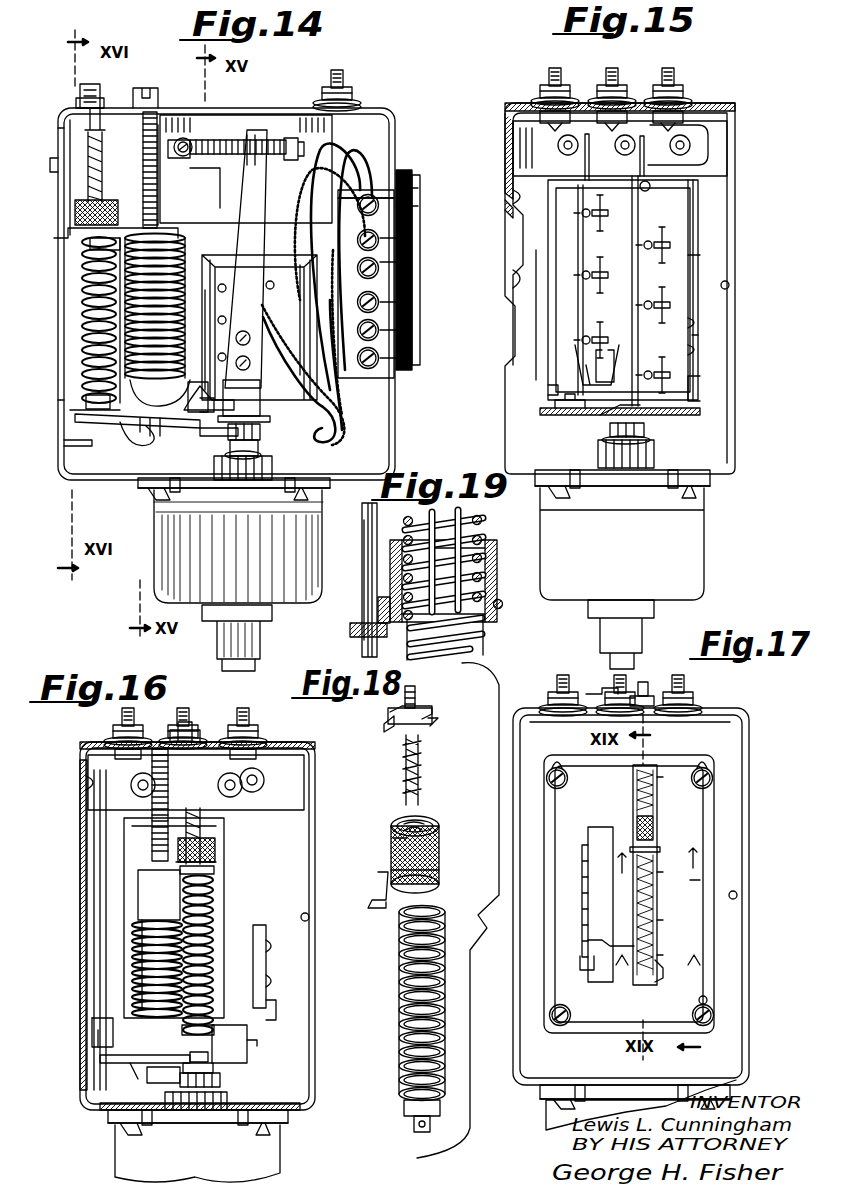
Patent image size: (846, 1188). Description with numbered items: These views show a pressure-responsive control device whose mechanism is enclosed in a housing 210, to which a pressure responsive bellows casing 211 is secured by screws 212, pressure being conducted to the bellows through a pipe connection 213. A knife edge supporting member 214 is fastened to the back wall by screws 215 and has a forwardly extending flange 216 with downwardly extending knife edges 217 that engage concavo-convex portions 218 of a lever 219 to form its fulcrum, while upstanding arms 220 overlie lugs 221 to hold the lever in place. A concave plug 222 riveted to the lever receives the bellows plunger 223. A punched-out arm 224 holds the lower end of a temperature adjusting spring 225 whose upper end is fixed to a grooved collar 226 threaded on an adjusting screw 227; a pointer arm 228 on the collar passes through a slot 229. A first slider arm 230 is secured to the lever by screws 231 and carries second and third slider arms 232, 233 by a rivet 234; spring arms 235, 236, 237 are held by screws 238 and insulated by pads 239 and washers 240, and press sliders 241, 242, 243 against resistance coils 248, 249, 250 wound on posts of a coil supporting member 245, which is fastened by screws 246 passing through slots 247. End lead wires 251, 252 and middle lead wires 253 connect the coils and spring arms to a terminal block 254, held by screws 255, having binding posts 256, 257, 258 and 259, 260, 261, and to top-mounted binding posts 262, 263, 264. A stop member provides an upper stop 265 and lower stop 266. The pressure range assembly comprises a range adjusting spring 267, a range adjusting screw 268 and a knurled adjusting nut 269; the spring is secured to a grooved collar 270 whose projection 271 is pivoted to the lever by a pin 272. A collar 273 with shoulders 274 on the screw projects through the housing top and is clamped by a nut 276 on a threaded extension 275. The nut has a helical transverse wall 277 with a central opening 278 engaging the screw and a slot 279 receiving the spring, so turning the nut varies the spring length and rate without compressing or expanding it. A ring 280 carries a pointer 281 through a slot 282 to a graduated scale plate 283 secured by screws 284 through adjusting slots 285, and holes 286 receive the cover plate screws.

In FIG. 14, the housing 210 is at (392, 110).
In FIG. 15, the housing 210 is at (715, 105).
In FIG. 19, the housing 210 is at (377, 520).
In FIG. 16, the housing 210 is at (292, 742).
In FIG. 17, the housing 210 is at (740, 718).
In FIG. 14, the pressure responsive bellows casing 211 is at (176, 533).
In FIG. 15, the pressure responsive bellows casing 211 is at (690, 538).
In FIG. 16, the pressure responsive bellows casing 211 is at (265, 1158).
In FIG. 17, the pressure responsive bellows casing 211 is at (556, 1118).
In FIG. 14, the screws 212 is at (150, 500).
In FIG. 15, the screws 212 is at (702, 492).
In FIG. 16, the screws 212 is at (280, 1128).
In FIG. 17, the screws 212 is at (550, 1104).
In FIG. 14, the pipe connection 213 is at (256, 662).
In FIG. 15, the pipe connection 213 is at (608, 660).
In FIG. 14, the knife edge supporting member 214 is at (300, 244).
In FIG. 15, the knife edge supporting member 214 is at (536, 318).
In FIG. 16, the knife edge supporting member 214 is at (114, 948).
In FIG. 14, the screws 215 is at (221, 282).
In FIG. 15, the screws 215 is at (512, 282).
In FIG. 14, the flange 216 is at (222, 316).
In FIG. 16, the flange 216 is at (100, 1034).
In FIG. 14, the knife edges 217 is at (200, 412).
In FIG. 14, the concavo-convex portions 218 is at (208, 436).
In FIG. 16, the concavo-convex portions 218 is at (218, 1060).
In FIG. 14, the lever 219 is at (140, 428).
In FIG. 15, the lever 219 is at (600, 416).
In FIG. 16, the lever 219 is at (136, 1066).
In FIG. 14, the upstanding arms 220 is at (208, 392).
In FIG. 16, the upstanding arms 220 is at (250, 1028).
In FIG. 14, the lugs 221 is at (214, 404).
In FIG. 16, the lugs 221 is at (252, 1043).
In FIG. 14, the concave plug 222 is at (262, 444).
In FIG. 15, the concave plug 222 is at (644, 430).
In FIG. 16, the concave plug 222 is at (214, 1068).
In FIG. 14, the bellows plunger 223 is at (268, 462).
In FIG. 15, the bellows plunger 223 is at (654, 458).
In FIG. 16, the bellows plunger 223 is at (218, 1080).
In FIG. 14, the arm 224 is at (152, 432).
In FIG. 16, the arm 224 is at (160, 1083).
In FIG. 14, the temperature adjusting spring 225 is at (126, 285).
In FIG. 16, the temperature adjusting spring 225 is at (136, 936).
In FIG. 14, the grooved collar 226 is at (92, 258).
In FIG. 16, the grooved collar 226 is at (138, 878).
In FIG. 14, the adjusting screw 227 is at (158, 198).
In FIG. 16, the adjusting screw 227 is at (124, 822).
In FIG. 17, the adjusting screw 227 is at (590, 718).
In FIG. 14, the pointer arm 228 is at (120, 326).
In FIG. 16, the pointer arm 228 is at (140, 896).
In FIG. 17, the pointer arm 228 is at (588, 942).
In FIG. 17, the slot 229 is at (580, 966).
In FIG. 14, the first slider arm 230 is at (252, 424).
In FIG. 15, the first slider arm 230 is at (690, 392).
In FIG. 16, the first slider arm 230 is at (270, 1010).
In FIG. 15, the screws 231 is at (540, 411).
In FIG. 15, the second slider arm 232 is at (626, 385).
In FIG. 15, the third slider arm 233 is at (560, 382).
In FIG. 15, the rivet 234 is at (610, 385).
In FIG. 14, the spring arm 235 is at (258, 312).
In FIG. 15, the spring arm 235 is at (690, 270).
In FIG. 14, the spring arm 236 is at (273, 282).
In FIG. 15, the spring arm 236 is at (636, 206).
In FIG. 15, the spring arm 237 is at (580, 240).
In FIG. 14, the screws 238 is at (268, 325).
In FIG. 15, the screws 238 is at (696, 322).
In FIG. 16, the screws 238 is at (266, 950).
In FIG. 15, the insulating pads 239 is at (698, 348).
In FIG. 16, the insulating pads 239 is at (256, 968).
In FIG. 15, the insulating washers 240 is at (698, 337).
In FIG. 16, the insulating washers 240 is at (270, 978).
In FIG. 14, the slider 241 is at (252, 158).
In FIG. 15, the slider 241 is at (690, 170).
In FIG. 14, the slider 242 is at (262, 172).
In FIG. 15, the slider 242 is at (634, 162).
In FIG. 15, the slider 243 is at (570, 182).
In FIG. 14, the coil supporting member 245 is at (222, 130).
In FIG. 15, the coil supporting member 245 is at (526, 138).
In FIG. 16, the coil supporting member 245 is at (100, 762).
In FIG. 14, the screws 246 is at (186, 138).
In FIG. 15, the screws 246 is at (512, 200).
In FIG. 16, the screws 246 is at (86, 786).
In FIG. 14, the slots 247 is at (176, 156).
In FIG. 14, the resistance coil 248 is at (248, 140).
In FIG. 15, the resistance coil 248 is at (690, 142).
In FIG. 16, the resistance coil 248 is at (262, 772).
In FIG. 15, the resistance coil 249 is at (636, 150).
In FIG. 16, the resistance coil 249 is at (202, 782).
In FIG. 15, the resistance coil 250 is at (558, 150).
In FIG. 16, the resistance coil 250 is at (138, 790).
In FIG. 14, the end lead wires 251 is at (345, 198).
In FIG. 14, the end lead wires 252 is at (240, 190).
In FIG. 14, the middle lead wires 253 is at (356, 378).
In FIG. 14, the terminal block 254 is at (402, 170).
In FIG. 15, the terminal block 254 is at (696, 216).
In FIG. 14, the screws 255 is at (404, 186).
In FIG. 15, the screws 255 is at (652, 186).
In FIG. 14, the binding post 256 is at (398, 358).
In FIG. 15, the binding post 256 is at (680, 378).
In FIG. 14, the binding post 257 is at (398, 302).
In FIG. 15, the binding post 257 is at (680, 310).
In FIG. 14, the binding post 258 is at (398, 238).
In FIG. 15, the binding post 258 is at (680, 250).
In FIG. 14, the binding post 259 is at (398, 332).
In FIG. 15, the binding post 259 is at (614, 335).
In FIG. 14, the binding post 260 is at (398, 262).
In FIG. 15, the binding post 260 is at (612, 282).
In FIG. 14, the binding post 261 is at (376, 192).
In FIG. 15, the binding post 261 is at (610, 220).
In FIG. 15, the binding post 262 is at (558, 68).
In FIG. 16, the binding post 262 is at (120, 718).
In FIG. 17, the binding post 262 is at (556, 683).
In FIG. 15, the binding post 263 is at (618, 72).
In FIG. 16, the binding post 263 is at (178, 712).
In FIG. 17, the binding post 263 is at (626, 684).
In FIG. 14, the binding post 264 is at (345, 78).
In FIG. 15, the binding post 264 is at (676, 72).
In FIG. 16, the binding post 264 is at (250, 718).
In FIG. 17, the binding post 264 is at (690, 682).
In FIG. 14, the upper stop 265 is at (70, 410).
In FIG. 14, the lower stop 266 is at (64, 444).
In FIG. 14, the pressure range adjusting spring 267 is at (82, 352).
In FIG. 19, the pressure range adjusting spring 267 is at (478, 652).
In FIG. 16, the pressure range adjusting spring 267 is at (214, 918).
In FIG. 18, the pressure range adjusting spring 267 is at (400, 1010).
In FIG. 17, the pressure range adjusting spring 267 is at (640, 785).
In FIG. 14, the range adjusting screw 268 is at (88, 140).
In FIG. 19, the range adjusting screw 268 is at (478, 522).
In FIG. 16, the range adjusting screw 268 is at (210, 890).
In FIG. 18, the range adjusting screw 268 is at (420, 750).
In FIG. 17, the range adjusting screw 268 is at (640, 800).
In FIG. 14, the knurled adjusting nut 269 is at (74, 212).
In FIG. 19, the knurled adjusting nut 269 is at (498, 572).
In FIG. 16, the knurled adjusting nut 269 is at (216, 850).
In FIG. 18, the knurled adjusting nut 269 is at (440, 856).
In FIG. 17, the knurled adjusting nut 269 is at (640, 826).
In FIG. 14, the grooved collar 270 is at (86, 396).
In FIG. 16, the grooved collar 270 is at (210, 1026).
In FIG. 18, the grooved collar 270 is at (440, 1102).
In FIG. 14, the projection 271 is at (95, 418).
In FIG. 16, the projection 271 is at (204, 1052).
In FIG. 18, the projection 271 is at (414, 1130).
In FIG. 14, the pin 272 is at (120, 430).
In FIG. 16, the pin 272 is at (178, 1124).
In FIG. 14, the collar 273 is at (100, 118).
In FIG. 16, the collar 273 is at (188, 760).
In FIG. 18, the collar 273 is at (432, 722).
In FIG. 18, the shoulders 274 is at (438, 712).
In FIG. 14, the screw-threaded extension 275 is at (84, 86).
In FIG. 16, the screw-threaded extension 275 is at (194, 724).
In FIG. 18, the screw-threaded extension 275 is at (418, 698).
In FIG. 17, the screw-threaded extension 275 is at (648, 712).
In FIG. 14, the nut 276 is at (78, 103).
In FIG. 16, the nut 276 is at (202, 734).
In FIG. 17, the nut 276 is at (636, 708).
In FIG. 19, the transverse wall 277 is at (498, 548).
In FIG. 18, the transverse wall 277 is at (428, 822).
In FIG. 18, the central opening 278 is at (436, 830).
In FIG. 18, the slot 279 is at (394, 846).
In FIG. 14, the ring 280 is at (146, 232).
In FIG. 19, the ring 280 is at (504, 604).
In FIG. 16, the ring 280 is at (216, 864).
In FIG. 18, the ring 280 is at (440, 882).
In FIG. 14, the pointer 281 is at (52, 238).
In FIG. 19, the pointer 281 is at (358, 624).
In FIG. 16, the pointer 281 is at (214, 872).
In FIG. 18, the pointer 281 is at (372, 904).
In FIG. 17, the pointer 281 is at (628, 852).
In FIG. 19, the slot 282 is at (378, 600).
In FIG. 17, the slot 282 is at (664, 976).
In FIG. 14, the scale plate 283 is at (68, 192).
In FIG. 19, the scale plate 283 is at (363, 552).
In FIG. 17, the scale plate 283 is at (695, 890).
In FIG. 14, the screws 284 is at (50, 170).
In FIG. 17, the screws 284 is at (714, 1015).
In FIG. 17, the slots 285 is at (708, 1000).
In FIG. 15, the holes 286 is at (730, 283).
In FIG. 16, the holes 286 is at (310, 917).
In FIG. 17, the holes 286 is at (738, 895).